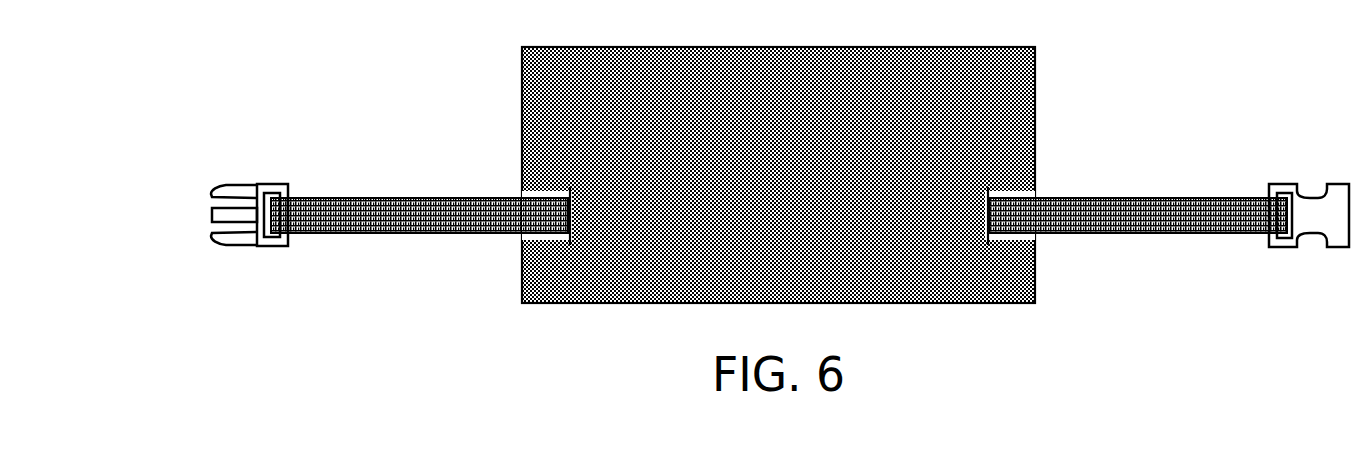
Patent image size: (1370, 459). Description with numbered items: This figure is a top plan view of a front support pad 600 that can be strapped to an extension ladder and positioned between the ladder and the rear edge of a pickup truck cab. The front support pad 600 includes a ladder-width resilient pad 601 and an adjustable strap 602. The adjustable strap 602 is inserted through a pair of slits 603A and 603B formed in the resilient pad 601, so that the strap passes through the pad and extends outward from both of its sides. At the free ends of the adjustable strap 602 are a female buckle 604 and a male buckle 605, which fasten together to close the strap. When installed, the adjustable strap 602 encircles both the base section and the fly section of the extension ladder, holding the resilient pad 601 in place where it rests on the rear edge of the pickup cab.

The front support pad 600 is at (752, 181).
The ladder-width resilient pad 601 is at (589, 289).
The adjustable strap 602 is at (418, 197).
The slit 603A is at (562, 191).
The slit 603B is at (993, 194).
The female buckle 604 is at (1311, 212).
The male buckle 605 is at (242, 192).